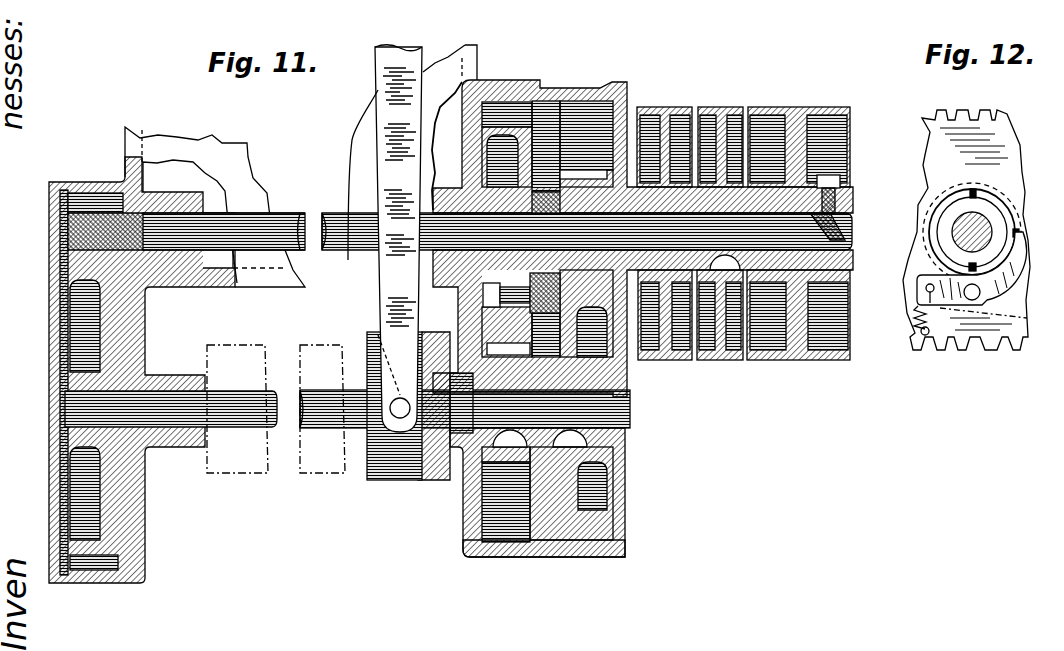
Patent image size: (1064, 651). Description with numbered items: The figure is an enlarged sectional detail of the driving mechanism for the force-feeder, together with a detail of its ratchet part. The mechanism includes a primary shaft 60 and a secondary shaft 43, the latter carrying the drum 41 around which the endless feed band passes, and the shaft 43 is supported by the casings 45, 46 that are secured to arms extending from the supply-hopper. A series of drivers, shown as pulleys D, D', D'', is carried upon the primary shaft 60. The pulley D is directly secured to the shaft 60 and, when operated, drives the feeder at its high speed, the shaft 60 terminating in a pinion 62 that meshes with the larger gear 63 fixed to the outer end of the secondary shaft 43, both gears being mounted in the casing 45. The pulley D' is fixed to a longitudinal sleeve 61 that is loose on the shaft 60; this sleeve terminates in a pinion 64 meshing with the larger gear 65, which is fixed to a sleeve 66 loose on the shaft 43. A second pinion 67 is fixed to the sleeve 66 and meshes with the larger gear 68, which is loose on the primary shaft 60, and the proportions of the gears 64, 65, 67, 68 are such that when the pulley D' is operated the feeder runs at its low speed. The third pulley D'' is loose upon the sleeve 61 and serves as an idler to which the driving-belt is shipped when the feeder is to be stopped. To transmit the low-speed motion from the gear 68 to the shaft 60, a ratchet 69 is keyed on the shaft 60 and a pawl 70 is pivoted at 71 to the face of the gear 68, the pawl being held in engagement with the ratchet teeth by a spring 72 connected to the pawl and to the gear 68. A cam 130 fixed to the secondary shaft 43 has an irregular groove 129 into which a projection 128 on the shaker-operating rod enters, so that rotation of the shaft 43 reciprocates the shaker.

In FIG. 11, the drum 41 is at (246, 474).
In FIG. 11, the secondary shaft 43 is at (50, 408).
In FIG. 11, the casing 45 is at (90, 571).
In FIG. 11, the casing 46 is at (530, 558).
In FIG. 11, the primary shaft 60 is at (50, 237).
In FIG. 12, the primary shaft 60 is at (992, 240).
In FIG. 11, the longitudinal sleeve 61 is at (688, 360).
In FIG. 11, the pinion 62 is at (90, 193).
In FIG. 11, the gear 63 is at (50, 486).
In FIG. 11, the pinion 64 is at (578, 177).
In FIG. 11, the gear 65 is at (617, 517).
In FIG. 11, the sleeve 66 is at (616, 383).
In FIG. 11, the pinion 67 is at (466, 488).
In FIG. 11, the gear 68 is at (488, 323).
In FIG. 12, the gear 68 is at (1008, 155).
In FIG. 11, the ratchet 69 is at (545, 192).
In FIG. 12, the ratchet 69 is at (997, 213).
In FIG. 11, the pawl 70 is at (517, 245).
In FIG. 12, the pawl 70 is at (1005, 268).
In FIG. 12, the pivot 71 is at (970, 300).
In FIG. 12, the spring 72 is at (918, 316).
In FIG. 11, the projection 128 is at (392, 404).
In FIG. 11, the irregular groove 129 is at (418, 468).
In FIG. 11, the cam 130 is at (383, 482).
In FIG. 11, the pulley D is at (799, 160).
In FIG. 11, the pulley D' is at (720, 134).
In FIG. 11, the idler pulley D'' is at (664, 134).